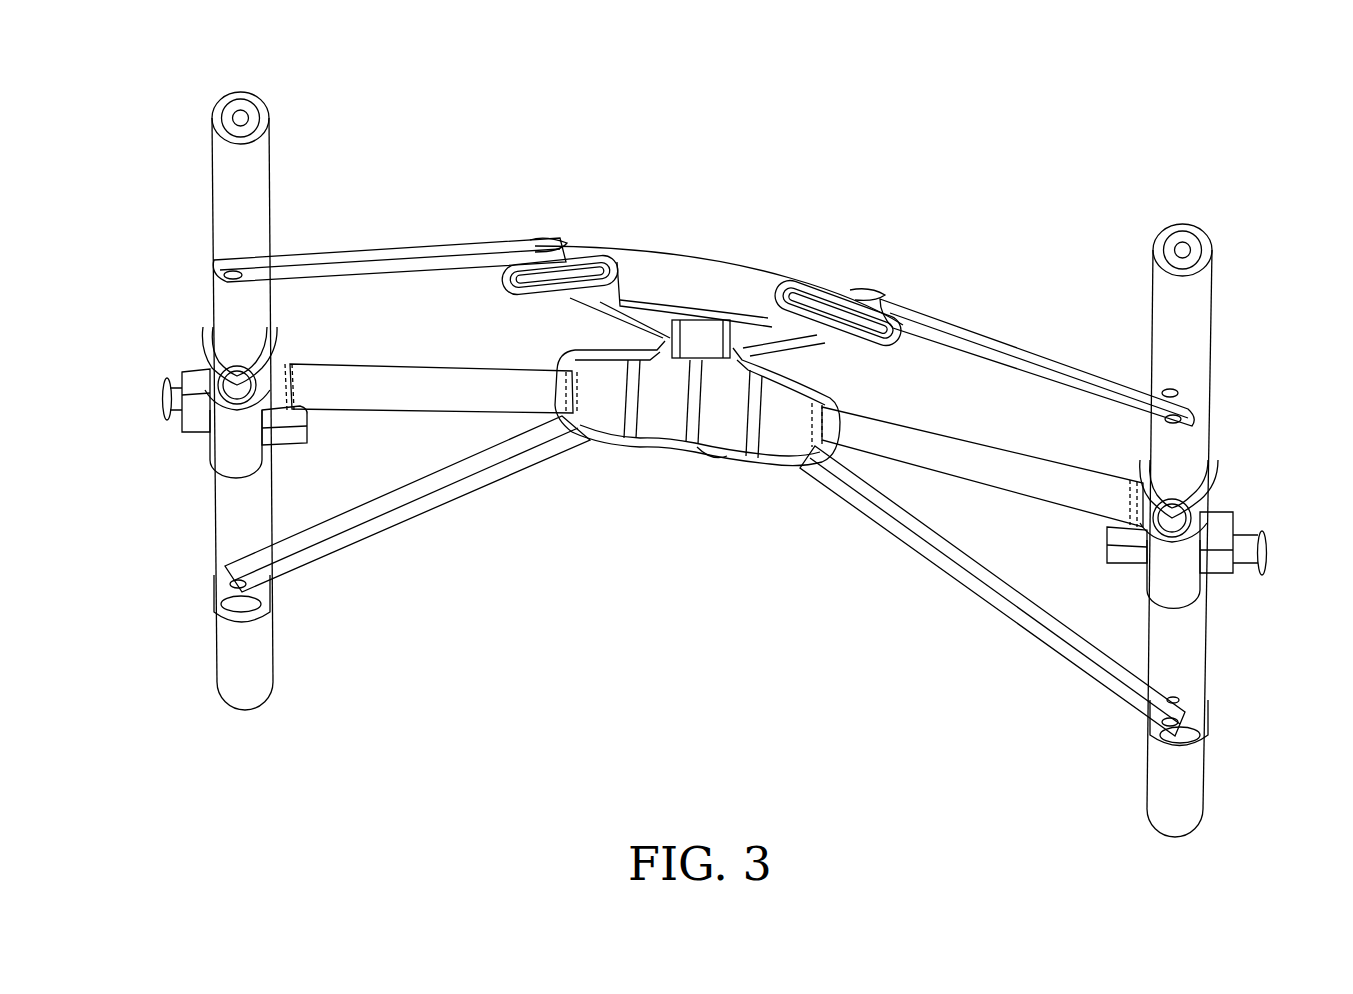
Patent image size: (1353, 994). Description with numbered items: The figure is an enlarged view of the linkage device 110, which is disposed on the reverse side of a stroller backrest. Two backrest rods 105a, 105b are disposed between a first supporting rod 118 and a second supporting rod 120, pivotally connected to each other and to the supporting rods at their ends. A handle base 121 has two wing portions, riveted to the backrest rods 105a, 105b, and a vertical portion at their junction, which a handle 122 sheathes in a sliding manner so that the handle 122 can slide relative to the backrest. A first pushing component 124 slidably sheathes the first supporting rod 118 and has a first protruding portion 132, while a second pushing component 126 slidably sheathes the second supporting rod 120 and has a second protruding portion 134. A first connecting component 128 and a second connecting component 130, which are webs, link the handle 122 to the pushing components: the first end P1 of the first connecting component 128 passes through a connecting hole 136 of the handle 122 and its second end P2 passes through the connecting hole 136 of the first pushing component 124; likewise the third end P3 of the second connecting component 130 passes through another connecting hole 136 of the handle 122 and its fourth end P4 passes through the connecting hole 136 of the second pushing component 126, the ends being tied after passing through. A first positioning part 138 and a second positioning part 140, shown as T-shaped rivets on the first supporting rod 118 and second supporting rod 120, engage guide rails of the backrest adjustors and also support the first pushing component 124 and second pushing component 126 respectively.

The linkage device 110 is at (850, 232).
The first supporting rod 118 is at (1188, 248).
The second supporting rod 120 is at (247, 116).
The handle base 121 is at (655, 262).
The handle 122 is at (665, 440).
The first pushing component 124 is at (1210, 500).
The second pushing component 126 is at (215, 345).
The first connecting component 128 is at (985, 465).
The second connecting component 130 is at (425, 385).
The first protruding portion 132 is at (1250, 530).
The second protruding portion 134 is at (195, 430).
The connecting hole 136 is at (292, 412).
The first positioning part 138 is at (1272, 555).
The second positioning part 140 is at (160, 398).
The backrest rod 105a is at (495, 470).
The backrest rod 105b is at (875, 510).
The first end P1 is at (840, 432).
The second end P2 is at (1115, 503).
The third end P3 is at (552, 392).
The fourth end P4 is at (312, 388).